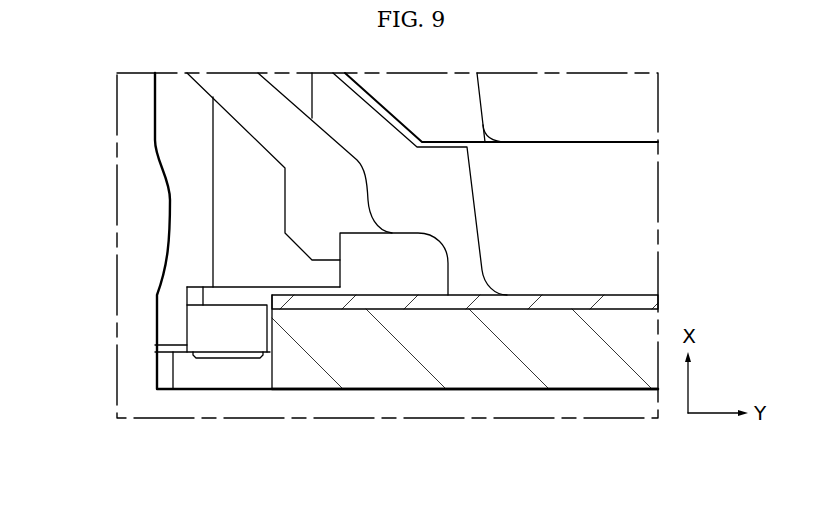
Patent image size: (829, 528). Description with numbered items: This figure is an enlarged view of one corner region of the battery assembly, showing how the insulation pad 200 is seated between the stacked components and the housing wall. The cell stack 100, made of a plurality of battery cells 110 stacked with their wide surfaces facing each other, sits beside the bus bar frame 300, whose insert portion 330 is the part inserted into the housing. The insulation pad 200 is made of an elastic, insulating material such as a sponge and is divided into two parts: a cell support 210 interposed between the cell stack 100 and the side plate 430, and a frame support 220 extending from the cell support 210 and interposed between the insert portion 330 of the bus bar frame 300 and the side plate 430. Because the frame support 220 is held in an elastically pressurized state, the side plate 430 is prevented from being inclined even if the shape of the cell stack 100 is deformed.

The cell stack 100 is at (679, 159).
The battery cell 110 is at (630, 237).
The insulation pad 200 is at (465, 406).
The cell support 210 is at (546, 302).
The frame support 220 is at (384, 302).
The bus bar frame 300 is at (177, 207).
The insert portion 330 is at (387, 257).
The side plate 430 is at (572, 390).